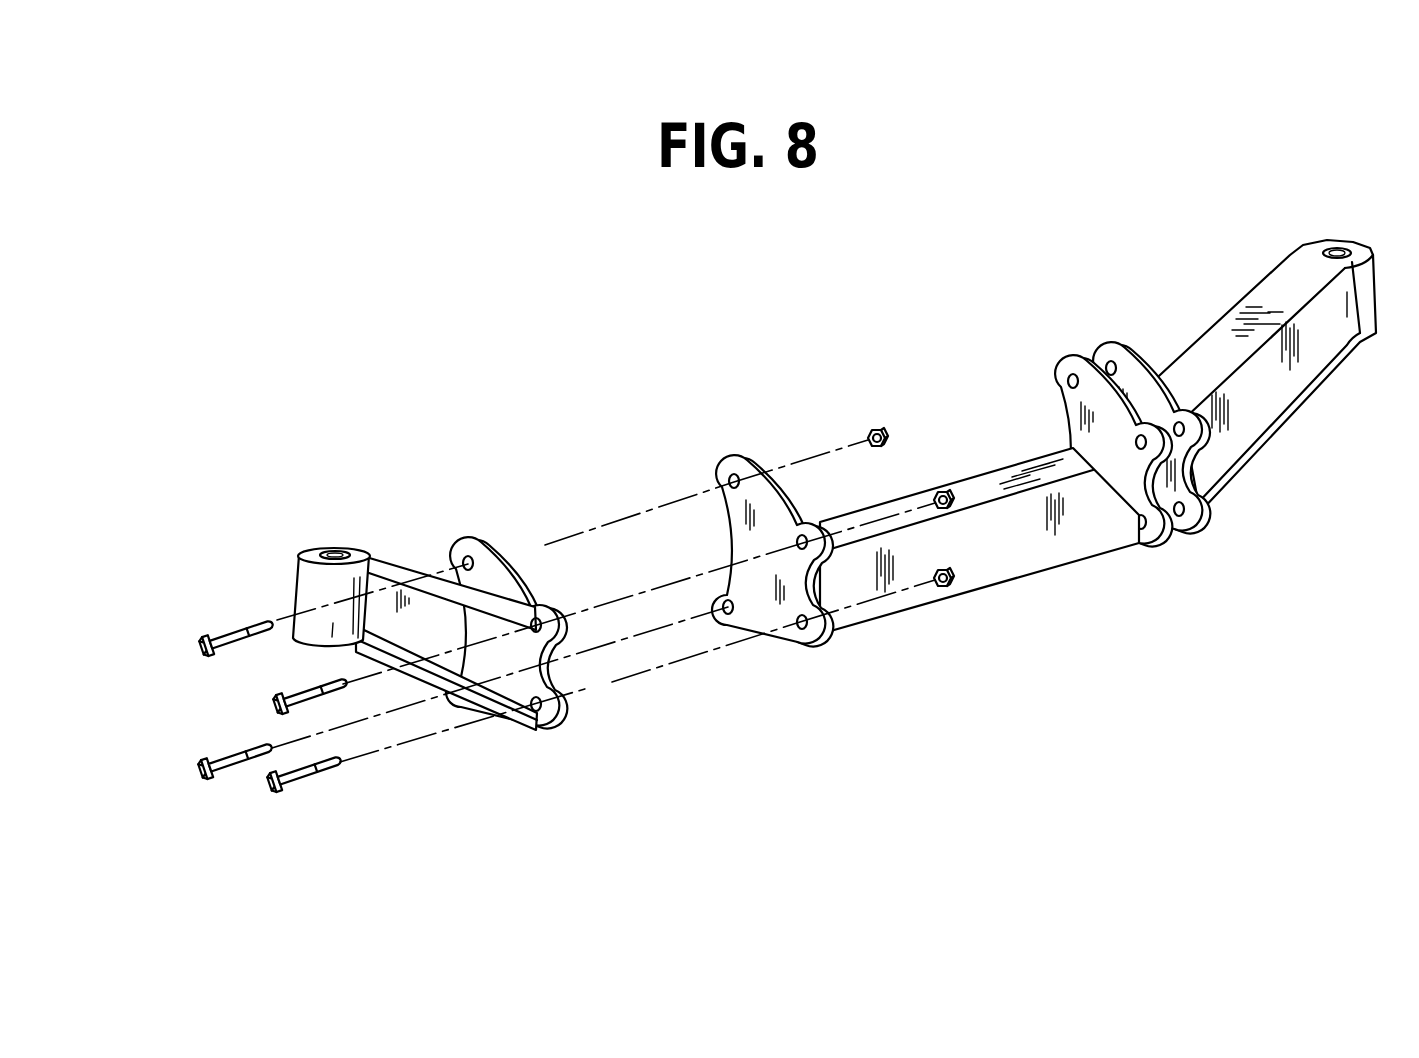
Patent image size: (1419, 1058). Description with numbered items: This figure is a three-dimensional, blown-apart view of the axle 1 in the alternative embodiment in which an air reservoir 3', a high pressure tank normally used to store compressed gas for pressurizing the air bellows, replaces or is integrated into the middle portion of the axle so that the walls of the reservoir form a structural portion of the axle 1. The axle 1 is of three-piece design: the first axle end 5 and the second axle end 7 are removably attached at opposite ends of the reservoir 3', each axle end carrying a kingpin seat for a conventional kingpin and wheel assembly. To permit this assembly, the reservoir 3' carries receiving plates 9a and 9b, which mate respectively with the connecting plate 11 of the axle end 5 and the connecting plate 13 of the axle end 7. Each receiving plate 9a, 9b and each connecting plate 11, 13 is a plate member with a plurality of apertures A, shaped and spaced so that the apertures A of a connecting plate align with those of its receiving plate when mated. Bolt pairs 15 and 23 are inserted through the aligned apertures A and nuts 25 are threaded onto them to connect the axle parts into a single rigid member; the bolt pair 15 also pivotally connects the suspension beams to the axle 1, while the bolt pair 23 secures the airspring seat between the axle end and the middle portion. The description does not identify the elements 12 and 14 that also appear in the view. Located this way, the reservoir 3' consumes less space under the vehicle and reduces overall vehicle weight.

The axle 1 is at (945, 407).
The air reservoir 3' is at (979, 546).
The axle end 5 is at (387, 583).
The axle end 7 is at (1270, 392).
The receiving plate 9a is at (772, 514).
The receiving plate 9b is at (1078, 450).
The connecting plate 11 is at (506, 676).
The bushing 12 is at (300, 565).
The connecting plate 13 is at (1149, 397).
The eye 14 is at (1313, 250).
The bolt pair 15 is at (203, 648).
The bolt pair 23 is at (290, 711).
The nuts 25 is at (888, 441).
The apertures A is at (545, 614).